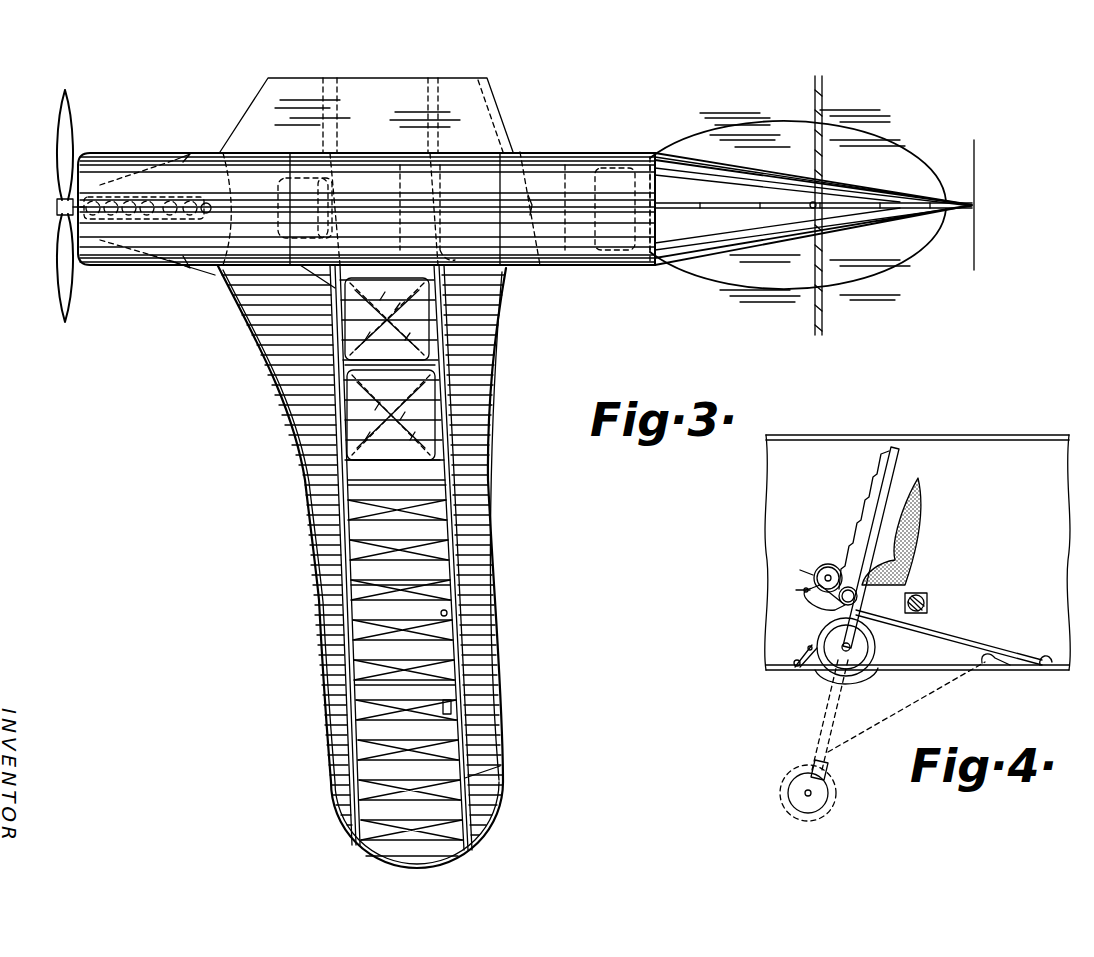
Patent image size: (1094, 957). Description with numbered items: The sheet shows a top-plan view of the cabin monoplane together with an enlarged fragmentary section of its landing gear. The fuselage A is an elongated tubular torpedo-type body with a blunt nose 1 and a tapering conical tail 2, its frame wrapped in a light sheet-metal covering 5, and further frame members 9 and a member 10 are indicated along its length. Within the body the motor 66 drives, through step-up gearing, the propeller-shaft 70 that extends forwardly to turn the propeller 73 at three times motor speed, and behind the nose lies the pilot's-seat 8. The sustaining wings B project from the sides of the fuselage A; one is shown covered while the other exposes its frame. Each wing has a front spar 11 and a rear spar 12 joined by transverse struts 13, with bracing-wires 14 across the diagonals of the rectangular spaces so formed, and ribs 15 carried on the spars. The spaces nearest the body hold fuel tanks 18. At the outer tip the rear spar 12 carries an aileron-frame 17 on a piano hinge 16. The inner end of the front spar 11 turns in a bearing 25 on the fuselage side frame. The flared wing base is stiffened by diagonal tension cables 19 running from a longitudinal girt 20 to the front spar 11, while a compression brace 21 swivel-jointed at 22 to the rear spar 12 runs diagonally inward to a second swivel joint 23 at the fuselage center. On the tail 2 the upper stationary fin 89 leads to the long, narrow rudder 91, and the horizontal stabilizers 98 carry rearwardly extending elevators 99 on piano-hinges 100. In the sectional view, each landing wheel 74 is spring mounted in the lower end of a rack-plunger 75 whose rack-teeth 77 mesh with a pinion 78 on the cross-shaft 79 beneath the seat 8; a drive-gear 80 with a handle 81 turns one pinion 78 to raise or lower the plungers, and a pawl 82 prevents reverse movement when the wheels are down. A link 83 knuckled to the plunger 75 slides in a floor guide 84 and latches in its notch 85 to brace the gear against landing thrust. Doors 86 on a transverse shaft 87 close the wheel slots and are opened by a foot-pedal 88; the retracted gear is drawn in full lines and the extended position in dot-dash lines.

In FIG. 3, the front end or nose 1 is at (78, 232).
In FIG. 3, the propeller 73 is at (58, 160).
In FIG. 3, the propeller-shaft 70 is at (57, 209).
In FIG. 3, the motor 66 is at (195, 200).
In FIG. 3, the pilot's-seat 8 is at (278, 212).
In FIG. 4, the pilot's-seat 8 is at (913, 572).
In FIG. 3, the wing-structure B is at (498, 107).
In FIG. 3, the fuselage frame 9 is at (604, 156).
In FIG. 3, the fuselage bulkhead 10 is at (450, 244).
In FIG. 3, the swivel joint connection 23 is at (535, 230).
In FIG. 3, the fuselage A is at (575, 262).
In FIG. 4, the fuselage A is at (1020, 438).
In FIG. 3, the longitudinal frame-beam or girt 20 is at (200, 265).
In FIG. 3, the covering of the fuselage frame 5 is at (700, 166).
In FIG. 3, the tail 2 is at (764, 170).
In FIG. 3, the upper stationary fin 89 is at (716, 206).
In FIG. 3, the rudder 91 is at (915, 194).
In FIG. 3, the horizontal stabilizer 98 is at (720, 104).
In FIG. 3, the elevator 99 is at (945, 84).
In FIG. 3, the piano-hinge 100 is at (822, 126).
In FIG. 3, the front spar 11 is at (340, 512).
In FIG. 3, the bearing 25 is at (335, 290).
In FIG. 3, the tension-bracing cables 19 is at (320, 328).
In FIG. 3, the compression member or brace 21 is at (470, 360).
In FIG. 3, the ribs 15 is at (355, 556).
In FIG. 3, the rear spar 12 is at (455, 526).
In FIG. 3, the fuel tank 18 is at (360, 355).
In FIG. 3, the swivel joint connection 22 is at (455, 422).
In FIG. 3, the transverse struts 13 is at (455, 486).
In FIG. 3, the bracing-wires 14 is at (440, 592).
In FIG. 3, the aileron-frame 17 is at (487, 708).
In FIG. 3, the piano-type hinge 16 is at (482, 776).
In FIG. 4, the rack-plunger 75 is at (900, 466).
In FIG. 4, the rack-teeth 77 is at (882, 486).
In FIG. 4, the drive-gear 80 is at (825, 564).
In FIG. 4, the cross-shaft 79 is at (850, 586).
In FIG. 4, the handle 81 is at (792, 569).
In FIG. 4, the pawl 82 is at (788, 591).
In FIG. 4, the pinion 78 is at (830, 605).
In FIG. 4, the landing wheel 74 is at (825, 634).
In FIG. 4, the brace-rod or link 83 is at (978, 630).
In FIG. 4, the notch 85 is at (1000, 660).
In FIG. 4, the guide 84 is at (1048, 656).
In FIG. 4, the foot-pedal 88 is at (800, 652).
In FIG. 4, the transverse shaft 87 is at (795, 668).
In FIG. 4, the door 86 is at (815, 678).